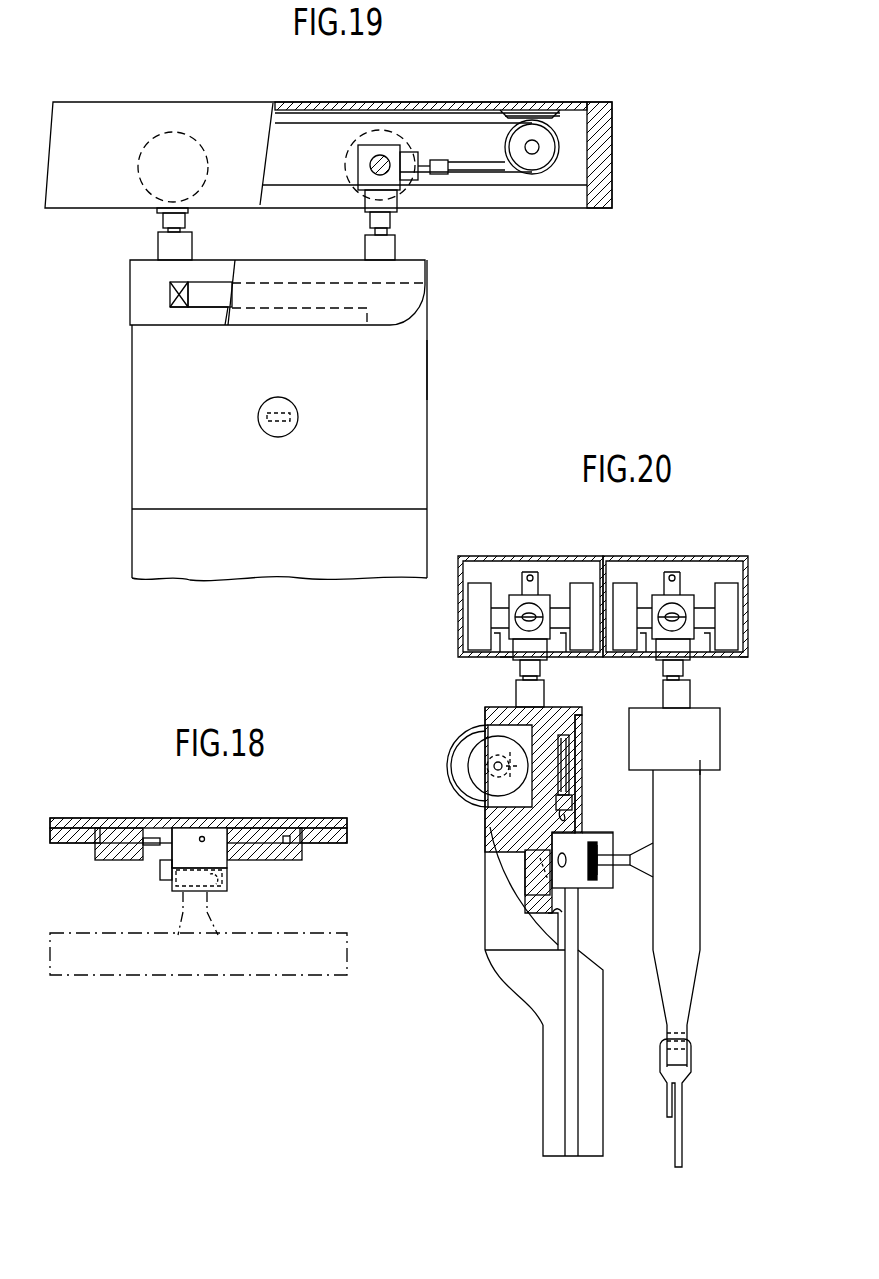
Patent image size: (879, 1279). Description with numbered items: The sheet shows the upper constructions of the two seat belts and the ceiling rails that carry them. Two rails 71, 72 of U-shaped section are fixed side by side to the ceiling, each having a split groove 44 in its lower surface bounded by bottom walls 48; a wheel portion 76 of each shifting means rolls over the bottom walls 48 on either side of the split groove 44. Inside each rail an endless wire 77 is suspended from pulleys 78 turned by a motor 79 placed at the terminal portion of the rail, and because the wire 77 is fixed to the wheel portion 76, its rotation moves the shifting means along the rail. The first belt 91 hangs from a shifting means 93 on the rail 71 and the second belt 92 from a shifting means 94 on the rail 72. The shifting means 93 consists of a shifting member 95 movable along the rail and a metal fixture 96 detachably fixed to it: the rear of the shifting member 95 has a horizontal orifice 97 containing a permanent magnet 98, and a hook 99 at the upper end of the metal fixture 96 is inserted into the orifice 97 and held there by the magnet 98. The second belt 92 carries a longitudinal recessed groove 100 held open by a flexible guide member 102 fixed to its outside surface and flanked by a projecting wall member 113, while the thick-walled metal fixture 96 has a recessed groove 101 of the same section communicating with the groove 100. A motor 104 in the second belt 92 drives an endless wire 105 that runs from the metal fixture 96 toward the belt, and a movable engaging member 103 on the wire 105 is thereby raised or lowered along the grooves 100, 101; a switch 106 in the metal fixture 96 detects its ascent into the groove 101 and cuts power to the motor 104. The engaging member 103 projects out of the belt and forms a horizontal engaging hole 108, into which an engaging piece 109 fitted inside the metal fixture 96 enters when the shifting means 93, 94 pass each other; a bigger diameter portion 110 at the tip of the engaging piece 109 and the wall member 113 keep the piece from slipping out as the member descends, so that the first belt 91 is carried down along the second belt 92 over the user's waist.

In FIG. 20, the split groove 44 is at (505, 658).
In FIG. 20, the bottom wall 48 is at (740, 660).
In FIG. 19, the rail 71 is at (213, 102).
In FIG. 20, the rail 71 is at (735, 558).
In FIG. 20, the rail 72 is at (508, 558).
In FIG. 19, the wheel portion 76 is at (163, 140).
In FIG. 20, the wheel portion 76 is at (578, 590).
In FIG. 19, the endless wire 77 is at (316, 120).
In FIG. 19, the pulley 78 is at (528, 130).
In FIG. 19, the motor 79 is at (553, 118).
In FIG. 20, the first belt 91 is at (679, 1130).
In FIG. 20, the second belt 92 is at (546, 1112).
In FIG. 18, the second belt 92 is at (335, 818).
In FIG. 19, the shifting means 93 is at (432, 372).
In FIG. 20, the shifting means 93 is at (724, 765).
In FIG. 18, the shifting means 93 is at (165, 978).
In FIG. 20, the shifting means 94 is at (483, 718).
In FIG. 19, the shifting member 95 is at (392, 263).
In FIG. 20, the shifting member 95 is at (708, 722).
In FIG. 19, the metal fixture 96 is at (412, 448).
In FIG. 20, the metal fixture 96 is at (490, 857).
In FIG. 19, the horizontal orifice 97 is at (212, 306).
In FIG. 19, the permanent magnet 98 is at (176, 288).
In FIG. 19, the hook 99 is at (195, 295).
In FIG. 18, the recessed groove 100 is at (158, 856).
In FIG. 20, the recessed groove 101 is at (560, 890).
In FIG. 20, the flexible guide member 102 is at (572, 1145).
In FIG. 18, the flexible guide member 102 is at (115, 852).
In FIG. 20, the movable engaging member 103 is at (550, 898).
In FIG. 18, the movable engaging member 103 is at (180, 830).
In FIG. 20, the motor 104 is at (478, 757).
In FIG. 20, the endless wire 105 is at (490, 803).
In FIG. 18, the endless wire 105 is at (207, 838).
In FIG. 20, the switch 106 is at (530, 880).
In FIG. 20, the engaging hole 108 is at (602, 838).
In FIG. 18, the engaging hole 108 is at (230, 886).
In FIG. 19, the engaging piece 109 is at (256, 415).
In FIG. 20, the engaging piece 109 is at (645, 855).
In FIG. 18, the engaging piece 109 is at (205, 905).
In FIG. 19, the bigger diameter portion 110 is at (266, 428).
In FIG. 20, the bigger diameter portion 110 is at (598, 888).
In FIG. 20, the projecting wall member 113 is at (590, 1133).